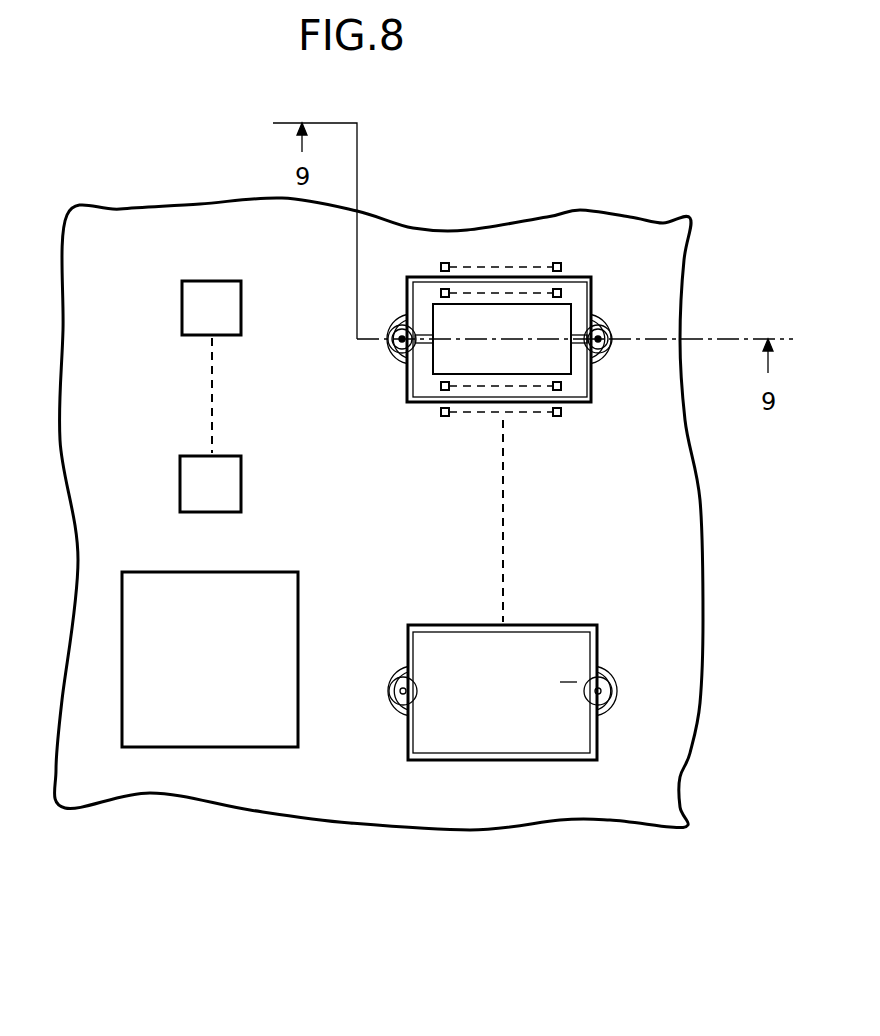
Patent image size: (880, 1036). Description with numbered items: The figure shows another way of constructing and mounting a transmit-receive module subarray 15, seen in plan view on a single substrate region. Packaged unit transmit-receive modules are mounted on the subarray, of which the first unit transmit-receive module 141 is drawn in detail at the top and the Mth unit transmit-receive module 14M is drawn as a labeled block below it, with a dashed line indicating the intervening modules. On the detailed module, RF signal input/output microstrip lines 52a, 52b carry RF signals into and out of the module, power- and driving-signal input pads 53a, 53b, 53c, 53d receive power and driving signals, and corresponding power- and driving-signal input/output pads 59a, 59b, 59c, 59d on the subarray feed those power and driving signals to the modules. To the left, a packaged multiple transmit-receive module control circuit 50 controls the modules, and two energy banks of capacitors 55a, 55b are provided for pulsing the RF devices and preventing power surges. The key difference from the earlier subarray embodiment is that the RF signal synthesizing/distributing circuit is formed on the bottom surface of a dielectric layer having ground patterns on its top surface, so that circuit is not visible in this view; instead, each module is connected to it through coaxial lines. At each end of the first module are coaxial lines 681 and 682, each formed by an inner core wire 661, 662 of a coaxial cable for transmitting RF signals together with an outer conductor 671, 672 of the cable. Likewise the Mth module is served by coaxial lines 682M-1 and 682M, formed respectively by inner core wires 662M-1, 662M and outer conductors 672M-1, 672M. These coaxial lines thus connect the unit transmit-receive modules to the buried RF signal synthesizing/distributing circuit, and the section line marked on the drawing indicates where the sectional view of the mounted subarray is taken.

The transmit-receive module subarray 15 is at (573, 815).
The multiple transmit-receive module control circuit 50 is at (157, 747).
The energy bank of capacitors 55a is at (182, 317).
The energy bank of capacitors 55b is at (180, 500).
The unit transmit-receive module 141 is at (522, 335).
The unit transmit-receive module 14M is at (536, 736).
The RF signal input/output microstrip line 52a is at (419, 277).
The RF signal input/output microstrip line 52b is at (593, 292).
The power- and driving-signal input pad 53a is at (450, 290).
The power- and driving-signal input pad 53b is at (561, 291).
The power- and driving-signal input pad 53c is at (441, 387).
The power- and driving-signal input pad 53d is at (561, 388).
The power- and driving-signal input/output pad 59a is at (446, 262).
The power- and driving-signal input/output pad 59b is at (558, 262).
The power- and driving-signal input/output pad 59c is at (441, 416).
The power- and driving-signal input/output pad 59d is at (561, 417).
The coaxial line 681 is at (334, 302).
The outer conductor of the coaxial cable 671 is at (395, 320).
The inner core wire of the coaxial cable 661 is at (382, 323).
The coaxial line 682 is at (688, 319).
The outer conductor of the coaxial cable 672 is at (617, 318).
The inner core wire of the coaxial cable 662 is at (626, 326).
The coaxial line 682M is at (720, 674).
The outer conductor of the coaxial cable 672M is at (620, 698).
The inner core wire of the coaxial cable 662M is at (610, 670).
The coaxial line 682M-1 is at (330, 789).
The outer conductor of the coaxial cable 672M-1 is at (377, 708).
The inner core wire of the coaxial cable 662M-1 is at (398, 717).